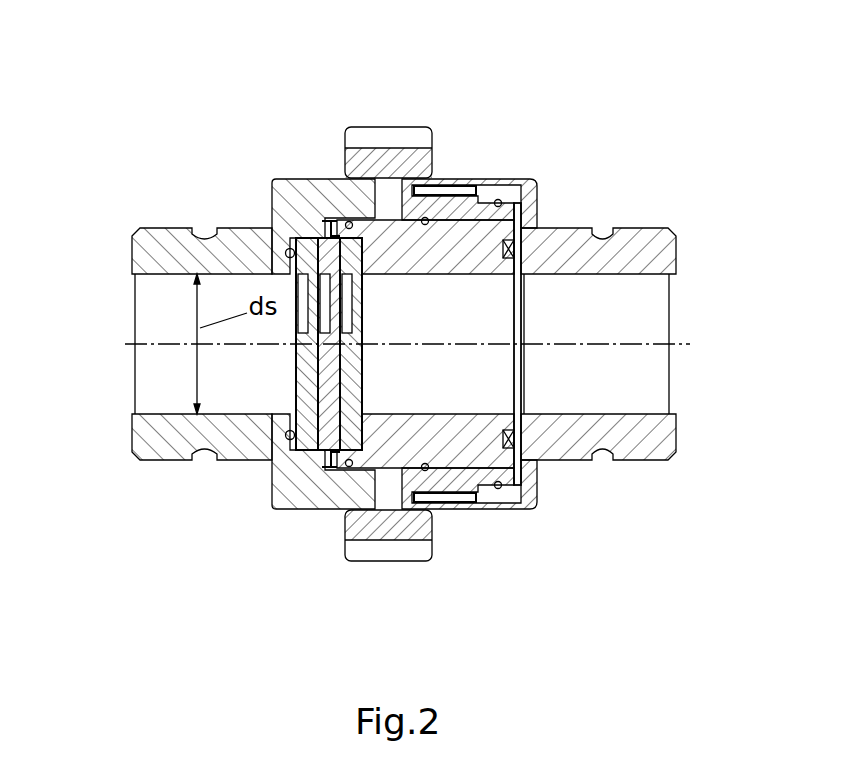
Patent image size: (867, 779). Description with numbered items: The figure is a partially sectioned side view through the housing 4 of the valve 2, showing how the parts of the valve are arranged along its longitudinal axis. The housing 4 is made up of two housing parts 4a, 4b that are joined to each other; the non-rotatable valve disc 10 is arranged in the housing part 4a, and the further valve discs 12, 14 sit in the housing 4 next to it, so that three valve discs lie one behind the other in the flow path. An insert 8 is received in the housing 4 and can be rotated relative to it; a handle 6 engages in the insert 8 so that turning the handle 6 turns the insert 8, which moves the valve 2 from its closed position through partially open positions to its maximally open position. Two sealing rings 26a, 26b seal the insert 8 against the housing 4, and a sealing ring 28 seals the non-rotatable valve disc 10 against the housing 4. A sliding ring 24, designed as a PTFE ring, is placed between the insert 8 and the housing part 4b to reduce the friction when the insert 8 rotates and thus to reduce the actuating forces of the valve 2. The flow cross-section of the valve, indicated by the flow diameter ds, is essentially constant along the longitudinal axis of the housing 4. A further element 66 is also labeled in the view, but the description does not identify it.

The valve 2 is at (620, 90).
The housing 4 is at (404, 322).
The housing part 4a is at (175, 462).
The housing part 4b is at (630, 240).
The handle 6 is at (402, 535).
The insert 8 is at (477, 500).
The non-rotatable valve disc 10 is at (307, 393).
The valve disc 12 is at (330, 440).
The valve disc 14 is at (353, 388).
The sliding ring 24 is at (538, 208).
The sealing ring 26a is at (353, 220).
The sealing ring 26b is at (428, 218).
The sealing ring 28 is at (288, 250).
The clamping nut 66 is at (303, 188).